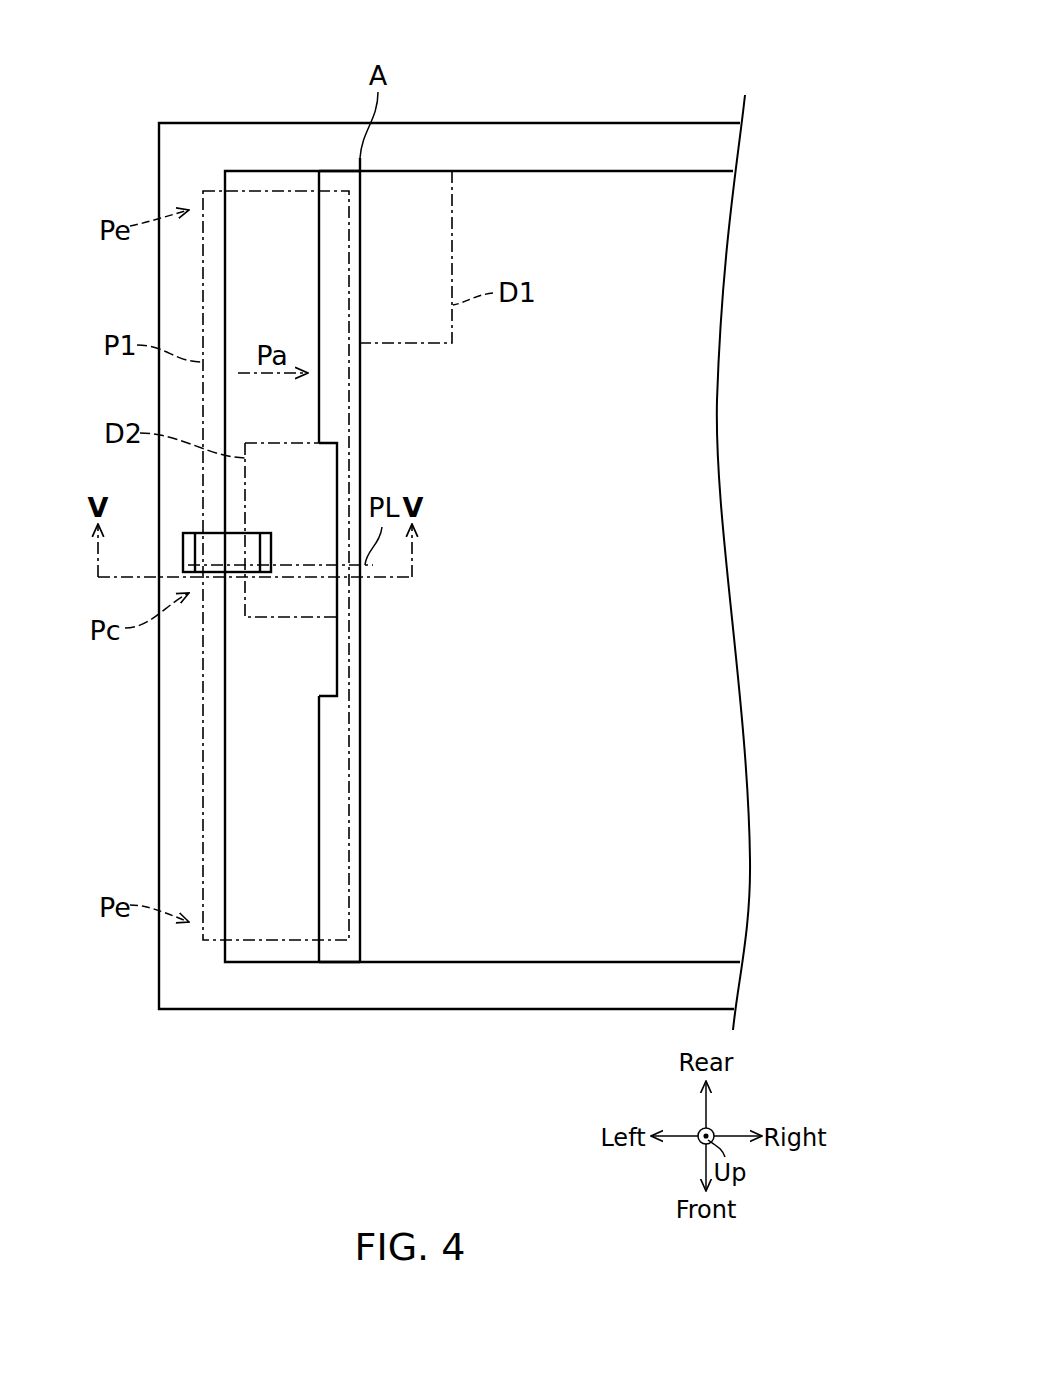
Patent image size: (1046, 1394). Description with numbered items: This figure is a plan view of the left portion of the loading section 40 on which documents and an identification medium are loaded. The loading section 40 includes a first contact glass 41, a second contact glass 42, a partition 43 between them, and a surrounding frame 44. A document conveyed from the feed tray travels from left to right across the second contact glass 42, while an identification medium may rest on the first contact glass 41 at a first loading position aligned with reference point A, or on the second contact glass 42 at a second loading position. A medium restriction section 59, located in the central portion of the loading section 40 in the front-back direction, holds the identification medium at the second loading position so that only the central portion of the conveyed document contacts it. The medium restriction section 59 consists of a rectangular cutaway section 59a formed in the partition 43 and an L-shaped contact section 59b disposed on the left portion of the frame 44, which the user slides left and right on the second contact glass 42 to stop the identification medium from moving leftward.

The loading section 40 is at (671, 96).
The first contact glass 41 is at (555, 190).
The second contact glass 42 is at (276, 178).
The partition 43 is at (346, 178).
The frame 44 is at (597, 138).
The medium restriction section 59 is at (270, 565).
The cutaway section 59a is at (343, 477).
The contact section 59b is at (177, 535).